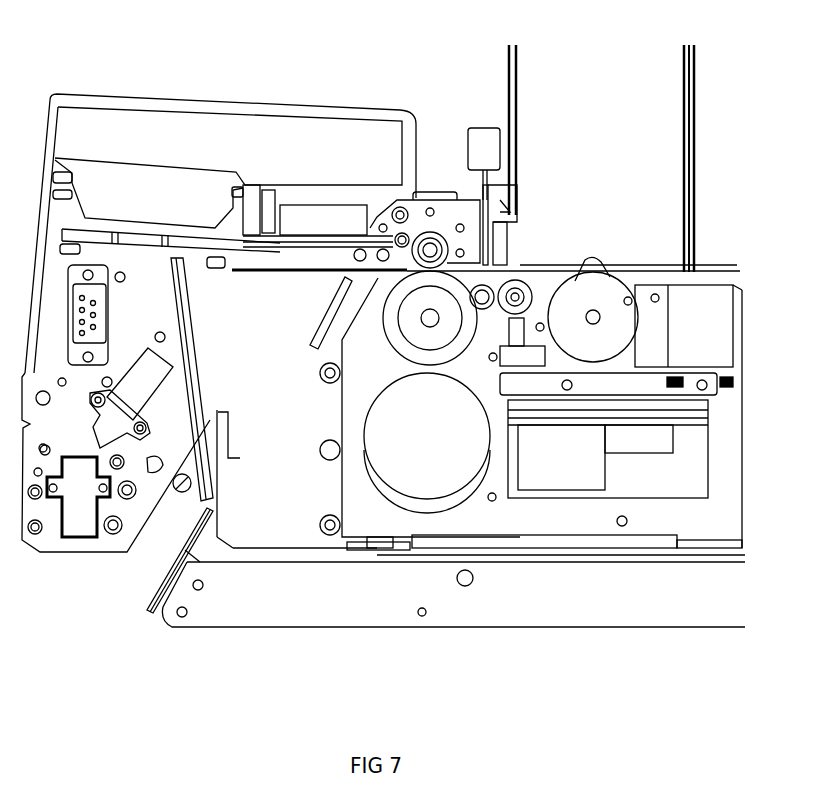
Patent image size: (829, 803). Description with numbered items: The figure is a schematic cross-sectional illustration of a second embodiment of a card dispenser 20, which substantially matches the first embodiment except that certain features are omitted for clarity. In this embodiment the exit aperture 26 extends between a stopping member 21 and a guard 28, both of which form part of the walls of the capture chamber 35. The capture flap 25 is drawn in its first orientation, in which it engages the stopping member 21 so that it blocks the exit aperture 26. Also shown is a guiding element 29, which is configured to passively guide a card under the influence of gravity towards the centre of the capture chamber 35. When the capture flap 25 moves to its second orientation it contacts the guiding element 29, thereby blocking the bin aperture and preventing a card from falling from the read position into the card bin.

The card dispenser 20 is at (227, 66).
The stopping member 21 is at (175, 310).
The capture flap 25 is at (205, 343).
The exit aperture 26 is at (241, 440).
The guard 28 is at (200, 517).
The guiding element 29 is at (322, 333).
The capture chamber 35 is at (291, 425).